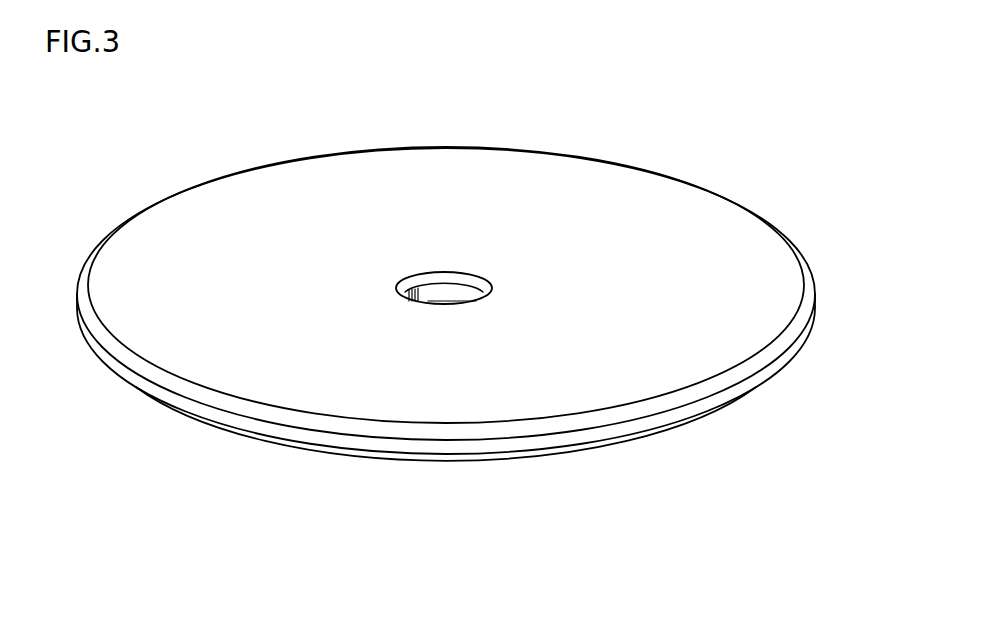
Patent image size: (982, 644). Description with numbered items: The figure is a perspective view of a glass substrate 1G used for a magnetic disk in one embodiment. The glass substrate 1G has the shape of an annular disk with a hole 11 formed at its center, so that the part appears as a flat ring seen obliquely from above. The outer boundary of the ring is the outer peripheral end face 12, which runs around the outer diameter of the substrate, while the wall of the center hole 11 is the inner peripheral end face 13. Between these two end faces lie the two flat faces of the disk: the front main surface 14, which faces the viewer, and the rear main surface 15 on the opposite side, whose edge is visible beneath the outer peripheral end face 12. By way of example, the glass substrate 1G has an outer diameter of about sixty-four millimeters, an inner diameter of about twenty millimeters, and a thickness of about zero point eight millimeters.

The glass substrate 1G is at (666, 106).
The hole 11 is at (447, 292).
The outer peripheral end face 12 is at (785, 365).
The inner peripheral end face 13 is at (434, 293).
The front main surface 14 is at (682, 210).
The rear main surface 15 is at (723, 415).